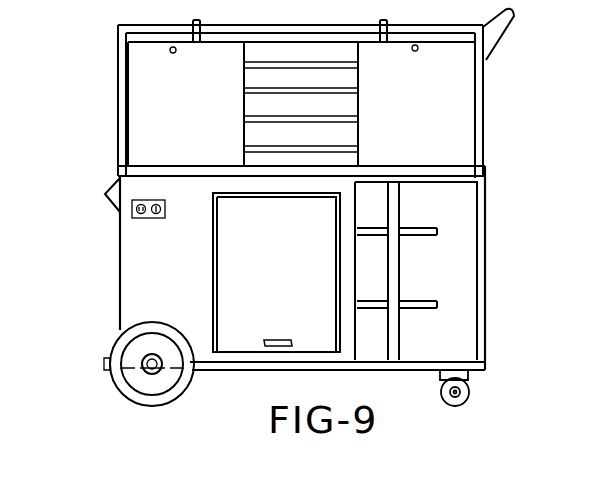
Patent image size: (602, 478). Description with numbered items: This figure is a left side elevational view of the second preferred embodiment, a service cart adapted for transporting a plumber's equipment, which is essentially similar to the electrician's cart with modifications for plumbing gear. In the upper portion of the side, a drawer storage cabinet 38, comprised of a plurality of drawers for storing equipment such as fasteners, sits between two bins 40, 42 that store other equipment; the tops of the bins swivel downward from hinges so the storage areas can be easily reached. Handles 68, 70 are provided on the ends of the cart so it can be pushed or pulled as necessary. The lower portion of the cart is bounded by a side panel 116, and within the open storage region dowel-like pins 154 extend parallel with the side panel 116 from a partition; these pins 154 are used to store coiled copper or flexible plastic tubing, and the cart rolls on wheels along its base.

The drawer storage cabinet 38 is at (305, 76).
The bin 40 is at (142, 106).
The bin 42 is at (459, 98).
The handle 68 is at (103, 193).
The handle 70 is at (510, 27).
The side panel 116 is at (143, 280).
The dowel-like pins 154 is at (438, 229).